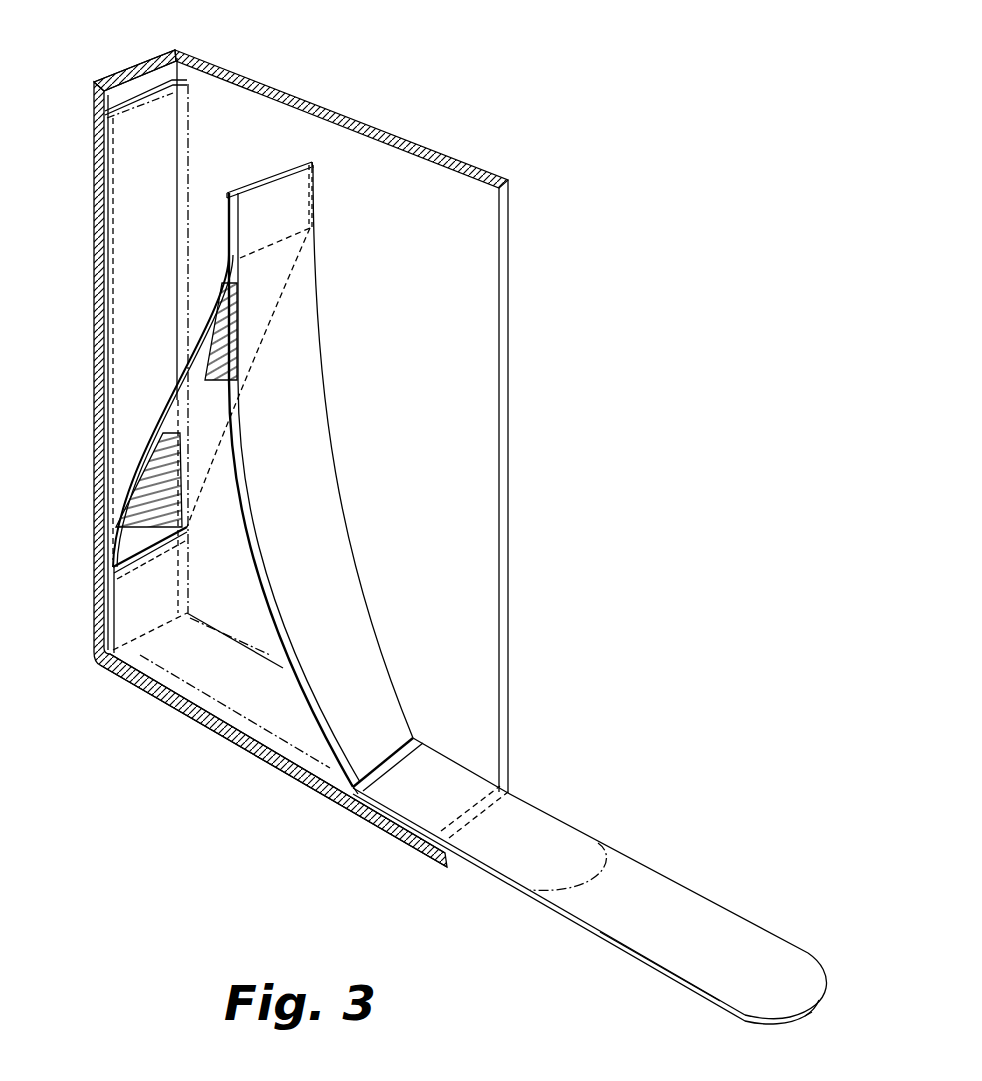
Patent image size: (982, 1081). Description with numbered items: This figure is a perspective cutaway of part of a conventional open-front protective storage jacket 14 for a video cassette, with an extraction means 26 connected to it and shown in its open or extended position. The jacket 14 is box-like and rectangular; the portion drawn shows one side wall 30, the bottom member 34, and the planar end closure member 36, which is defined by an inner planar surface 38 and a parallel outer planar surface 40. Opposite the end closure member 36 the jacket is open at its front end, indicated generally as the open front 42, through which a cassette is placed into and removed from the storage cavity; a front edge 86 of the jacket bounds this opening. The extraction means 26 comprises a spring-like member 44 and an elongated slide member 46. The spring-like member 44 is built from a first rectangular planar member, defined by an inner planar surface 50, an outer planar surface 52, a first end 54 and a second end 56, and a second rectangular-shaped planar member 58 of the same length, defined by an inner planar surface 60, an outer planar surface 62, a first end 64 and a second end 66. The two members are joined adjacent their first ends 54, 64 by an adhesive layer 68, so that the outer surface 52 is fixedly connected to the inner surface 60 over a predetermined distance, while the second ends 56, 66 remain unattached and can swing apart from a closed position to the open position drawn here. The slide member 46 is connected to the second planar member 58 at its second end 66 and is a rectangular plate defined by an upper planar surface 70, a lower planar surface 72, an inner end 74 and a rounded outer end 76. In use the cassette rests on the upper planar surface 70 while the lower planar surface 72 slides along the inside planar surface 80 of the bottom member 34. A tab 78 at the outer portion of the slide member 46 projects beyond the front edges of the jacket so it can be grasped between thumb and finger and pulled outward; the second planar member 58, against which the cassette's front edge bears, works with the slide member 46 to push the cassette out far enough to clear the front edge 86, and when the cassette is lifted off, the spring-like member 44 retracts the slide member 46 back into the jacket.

The protective storage jacket 14 is at (421, 136).
The extraction means 26 is at (484, 714).
The side wall 30 is at (514, 361).
The bottom member 34 is at (262, 756).
The end closure member 36 is at (120, 70).
The inner planar surface 38 is at (142, 76).
The outer planar surface 40 is at (96, 171).
The open front 42 is at (483, 246).
The spring-like member 44 is at (205, 323).
The slide member 46 is at (683, 990).
The inner planar surface 50 is at (140, 452).
The outer planar surface 52 is at (128, 545).
The first end 54 is at (284, 165).
The second end 56 is at (132, 660).
The second rectangular-shaped planar member 58 is at (299, 385).
The inner planar surface 60 is at (258, 598).
The outer planar surface 62 is at (316, 478).
The first end 64 is at (317, 171).
The second end 66 is at (396, 745).
The adhesive layer 68 is at (312, 165).
The upper planar surface 70 is at (562, 830).
The lower planar surface 72 is at (580, 930).
The inner end 74 is at (348, 803).
The outer end 76 is at (822, 1003).
The tab 78 is at (803, 973).
The inside planar surface 80 is at (225, 698).
The front edge 86 is at (512, 301).